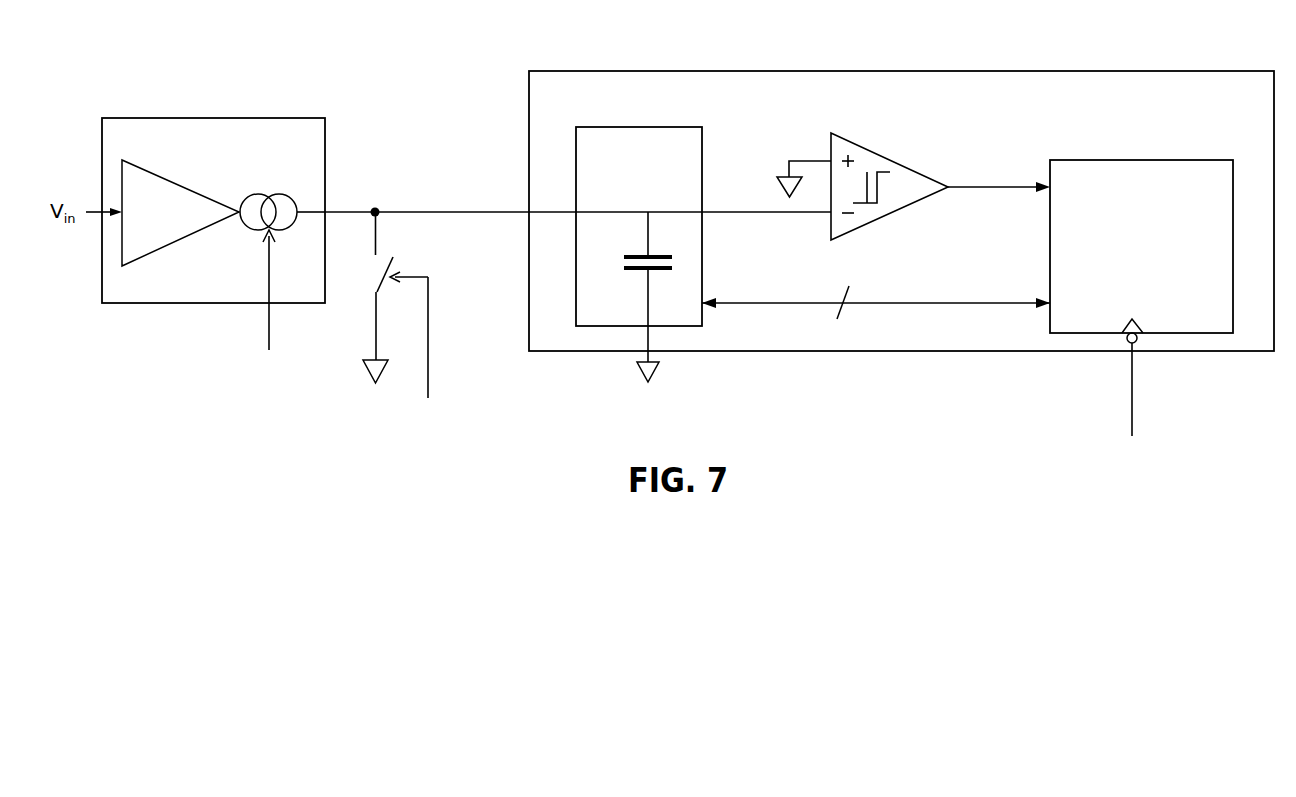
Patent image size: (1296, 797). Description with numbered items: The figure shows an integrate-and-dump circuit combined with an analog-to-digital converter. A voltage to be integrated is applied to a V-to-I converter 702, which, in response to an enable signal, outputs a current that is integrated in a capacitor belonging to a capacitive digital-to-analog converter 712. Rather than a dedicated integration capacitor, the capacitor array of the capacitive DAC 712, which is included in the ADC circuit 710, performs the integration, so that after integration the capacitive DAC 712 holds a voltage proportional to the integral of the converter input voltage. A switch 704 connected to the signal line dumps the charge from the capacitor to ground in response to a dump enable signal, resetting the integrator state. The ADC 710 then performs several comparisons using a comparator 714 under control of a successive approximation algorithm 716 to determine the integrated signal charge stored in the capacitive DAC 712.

The V-to-I converter 702 is at (222, 118).
The switch 704 is at (381, 249).
The ADC circuit 710 is at (645, 70).
The capacitive digital-to-analog converter 712 is at (703, 161).
The comparator 714 is at (932, 177).
The successive approximation algorithm 716 is at (1135, 160).